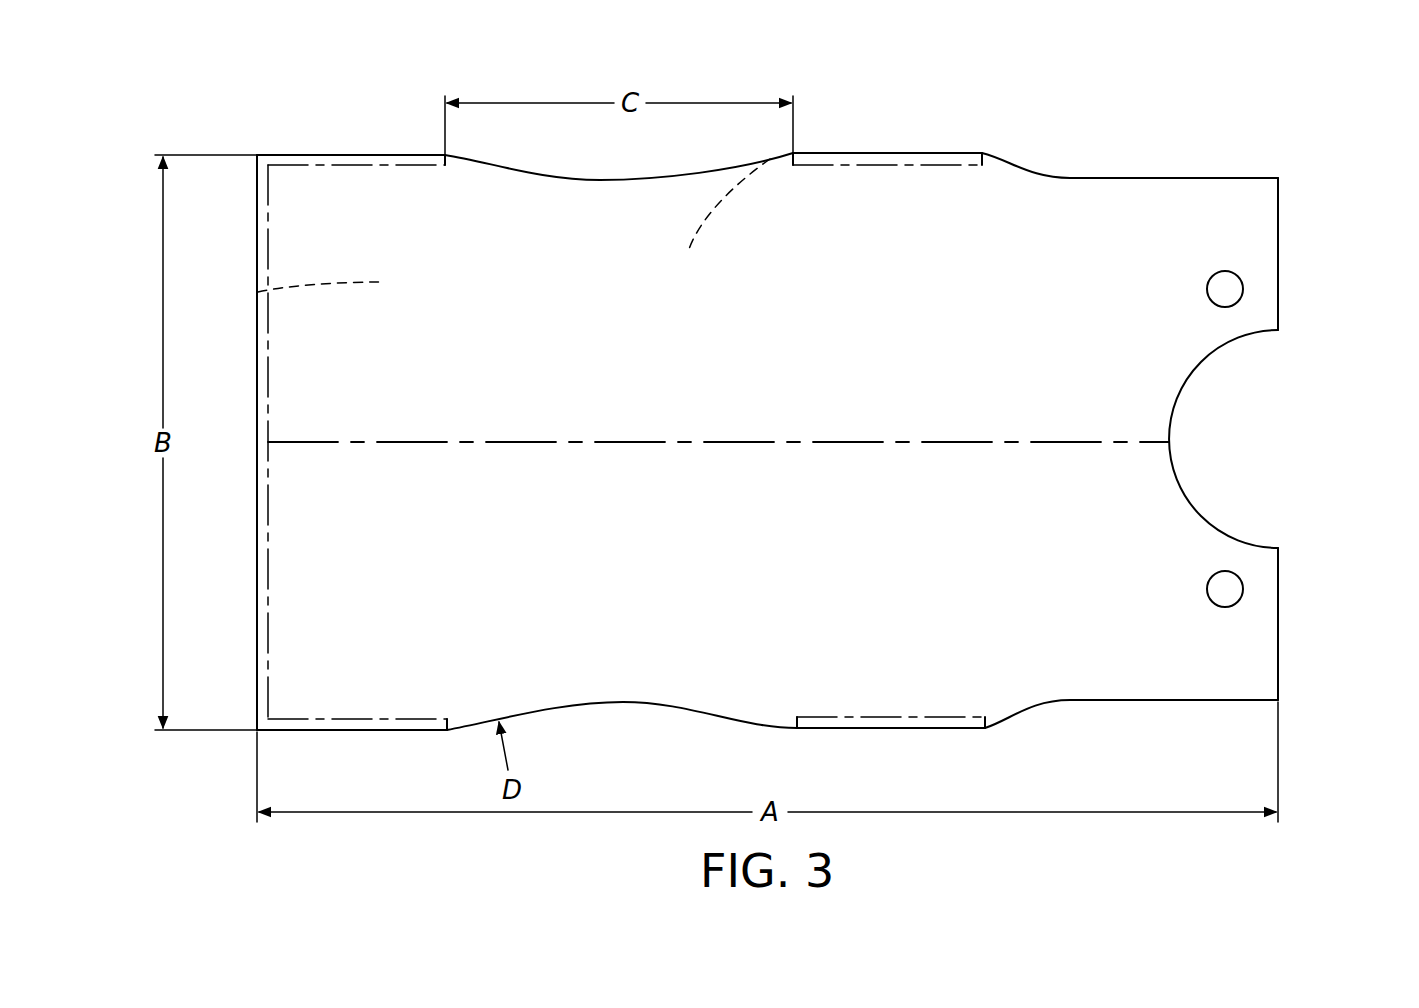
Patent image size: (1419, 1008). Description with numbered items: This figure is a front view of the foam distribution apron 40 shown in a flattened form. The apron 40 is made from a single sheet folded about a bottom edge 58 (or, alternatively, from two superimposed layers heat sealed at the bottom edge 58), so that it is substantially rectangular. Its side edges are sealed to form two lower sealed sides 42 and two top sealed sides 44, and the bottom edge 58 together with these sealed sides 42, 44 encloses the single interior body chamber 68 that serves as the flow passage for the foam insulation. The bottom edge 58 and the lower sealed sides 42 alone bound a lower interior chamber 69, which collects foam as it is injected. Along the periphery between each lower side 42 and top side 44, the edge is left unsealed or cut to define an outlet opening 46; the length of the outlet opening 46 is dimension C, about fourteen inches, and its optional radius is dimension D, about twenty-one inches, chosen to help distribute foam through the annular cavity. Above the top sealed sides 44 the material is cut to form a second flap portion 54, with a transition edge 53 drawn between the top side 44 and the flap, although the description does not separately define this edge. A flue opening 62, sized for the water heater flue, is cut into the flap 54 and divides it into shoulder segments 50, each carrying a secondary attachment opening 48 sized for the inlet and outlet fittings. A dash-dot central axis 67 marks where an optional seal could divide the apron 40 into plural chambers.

The foam distribution apron 40 is at (211, 116).
The lower sealed side 42 is at (380, 154).
The top sealed side 44 is at (937, 152).
The outlet opening 46 is at (596, 180).
The secondary attachment opening 48 is at (1243, 282).
The shoulder segment 50 is at (1218, 208).
The transition edge 53 is at (1055, 173).
The second flap portion 54 is at (1148, 207).
The bottom edge 58 is at (257, 600).
The flue opening 62 is at (1178, 470).
The central axis 67 is at (372, 443).
The interior body chamber 68 is at (770, 159).
The lower interior chamber 69 is at (258, 292).